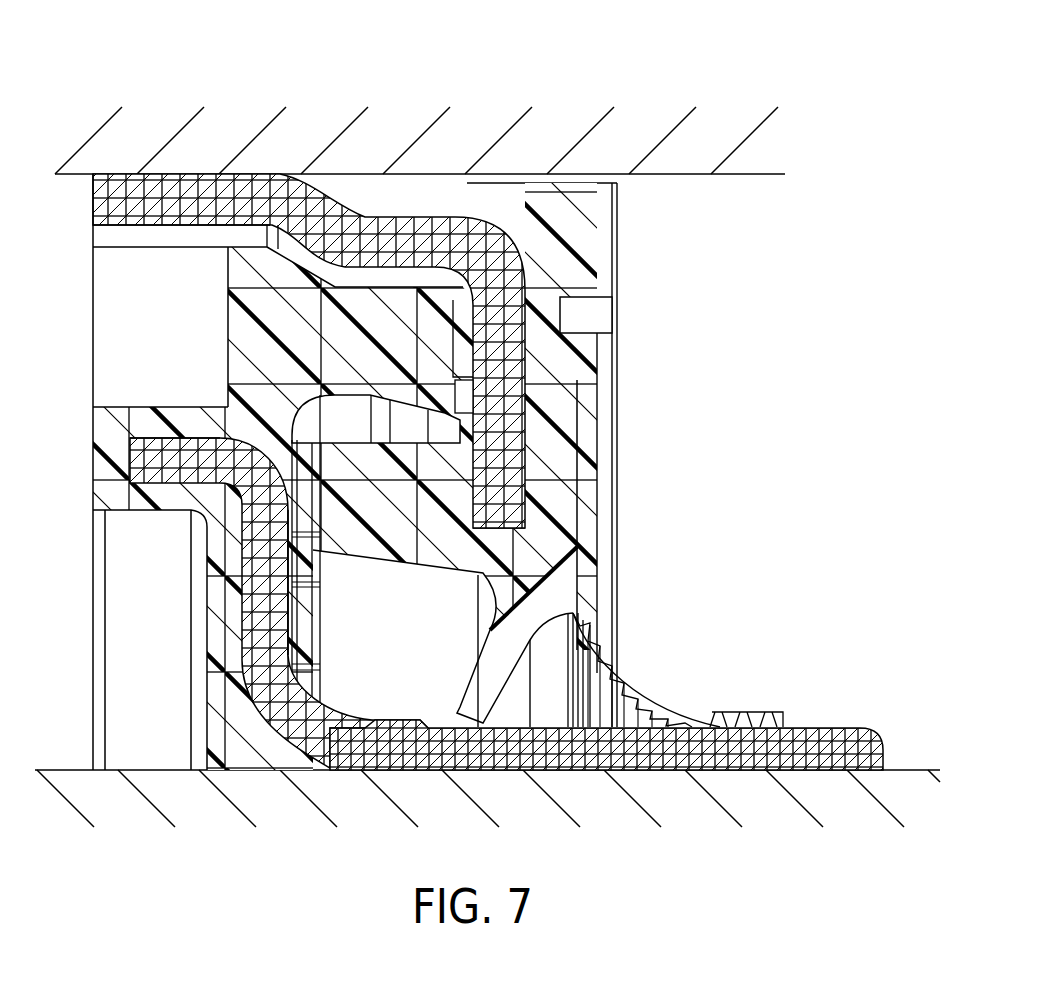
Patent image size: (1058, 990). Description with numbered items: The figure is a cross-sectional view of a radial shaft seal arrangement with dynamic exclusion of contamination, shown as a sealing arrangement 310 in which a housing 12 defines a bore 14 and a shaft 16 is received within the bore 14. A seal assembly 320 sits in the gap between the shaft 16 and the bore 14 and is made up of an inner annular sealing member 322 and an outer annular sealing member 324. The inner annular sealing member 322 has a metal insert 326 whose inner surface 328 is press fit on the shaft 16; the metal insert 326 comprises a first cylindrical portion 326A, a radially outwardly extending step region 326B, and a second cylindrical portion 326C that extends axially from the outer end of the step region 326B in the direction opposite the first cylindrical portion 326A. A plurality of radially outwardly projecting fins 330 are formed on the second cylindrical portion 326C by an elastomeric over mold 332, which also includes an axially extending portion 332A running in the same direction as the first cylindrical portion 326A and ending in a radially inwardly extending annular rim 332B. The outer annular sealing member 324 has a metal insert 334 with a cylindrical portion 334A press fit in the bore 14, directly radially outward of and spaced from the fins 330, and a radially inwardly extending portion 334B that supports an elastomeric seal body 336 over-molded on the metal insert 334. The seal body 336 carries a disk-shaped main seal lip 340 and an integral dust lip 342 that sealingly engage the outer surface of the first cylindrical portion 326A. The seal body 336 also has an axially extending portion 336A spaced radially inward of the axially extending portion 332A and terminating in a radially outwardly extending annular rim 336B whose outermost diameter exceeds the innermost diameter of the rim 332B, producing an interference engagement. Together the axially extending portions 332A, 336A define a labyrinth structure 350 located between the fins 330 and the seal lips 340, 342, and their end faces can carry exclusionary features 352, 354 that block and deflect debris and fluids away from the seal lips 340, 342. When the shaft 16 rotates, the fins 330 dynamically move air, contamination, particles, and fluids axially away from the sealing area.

The housing 12 is at (363, 140).
The bore 14 is at (722, 178).
The shaft 16 is at (885, 770).
The sealing arrangement 310 is at (797, 118).
The seal assembly 320 is at (759, 378).
The inner annular sealing member 322 is at (106, 587).
The outer annular sealing member 324 is at (645, 278).
The metal insert 326 is at (333, 707).
The first cylindrical portion 326A is at (667, 740).
The radially outwardly extending step region 326B is at (263, 613).
The second cylindrical portion 326C is at (153, 460).
The inner surface 328 is at (430, 775).
The radially outwardly projecting fins 330 is at (130, 290).
The elastomeric over mold 332 is at (207, 650).
The axially extending portion 332A is at (385, 310).
The radially inwardly extending annular rim 332B is at (475, 418).
The metal insert 334 is at (534, 245).
The cylindrical portion 334A is at (200, 190).
The radially inwardly extending portion 334B is at (492, 352).
The seal body 336 is at (581, 528).
The axially extending portion 336A is at (440, 552).
The radially outwardly extending annular rim 336B is at (327, 433).
The main seal lip 340 is at (612, 672).
The dust lip 342 is at (473, 687).
The labyrinth structure 350 is at (463, 427).
The exclusionary features 352 is at (460, 350).
The exclusionary features 354 is at (303, 477).